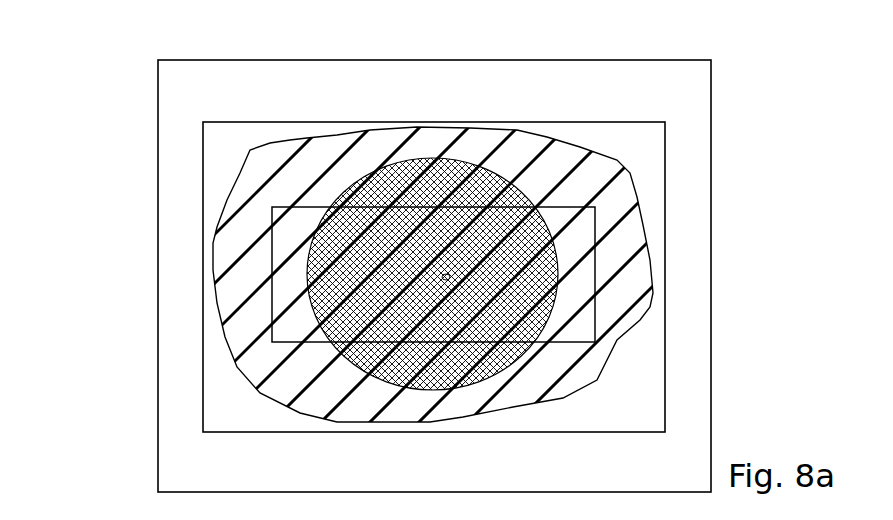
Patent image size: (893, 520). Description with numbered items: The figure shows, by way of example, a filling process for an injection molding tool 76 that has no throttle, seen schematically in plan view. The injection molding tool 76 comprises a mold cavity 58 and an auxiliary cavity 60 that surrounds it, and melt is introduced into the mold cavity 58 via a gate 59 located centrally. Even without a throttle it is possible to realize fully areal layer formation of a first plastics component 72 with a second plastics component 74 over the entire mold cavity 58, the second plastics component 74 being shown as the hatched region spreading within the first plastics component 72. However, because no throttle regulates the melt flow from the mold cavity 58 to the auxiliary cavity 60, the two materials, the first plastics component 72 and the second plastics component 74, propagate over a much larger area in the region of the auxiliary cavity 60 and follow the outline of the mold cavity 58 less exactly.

The injection molding tool 76 is at (130, 58).
The auxiliary cavity 60 is at (205, 306).
The first plastics component 72 is at (337, 422).
The second plastics component 74 is at (547, 230).
The mold cavity 58 is at (595, 252).
The gate 59 is at (449, 277).